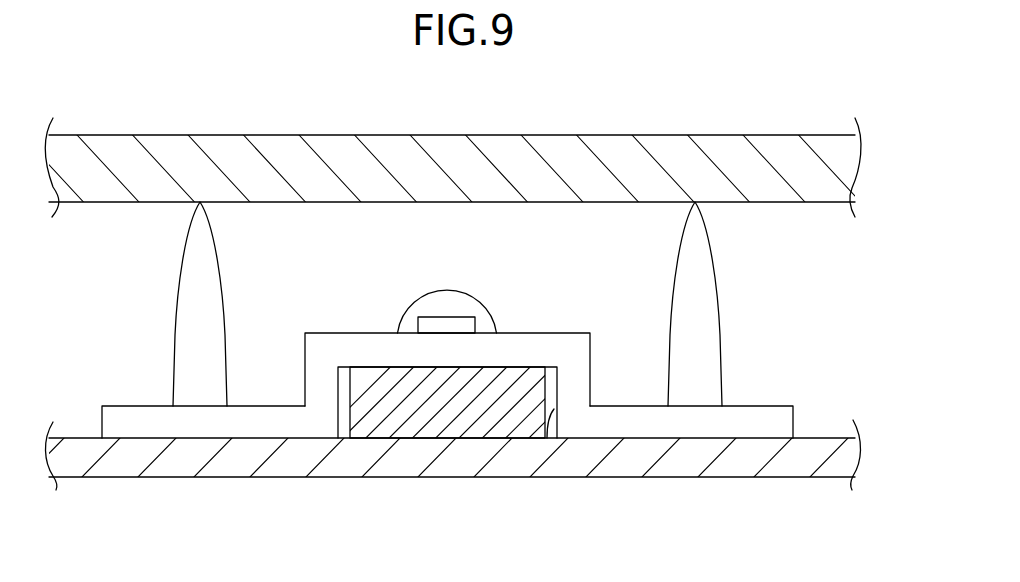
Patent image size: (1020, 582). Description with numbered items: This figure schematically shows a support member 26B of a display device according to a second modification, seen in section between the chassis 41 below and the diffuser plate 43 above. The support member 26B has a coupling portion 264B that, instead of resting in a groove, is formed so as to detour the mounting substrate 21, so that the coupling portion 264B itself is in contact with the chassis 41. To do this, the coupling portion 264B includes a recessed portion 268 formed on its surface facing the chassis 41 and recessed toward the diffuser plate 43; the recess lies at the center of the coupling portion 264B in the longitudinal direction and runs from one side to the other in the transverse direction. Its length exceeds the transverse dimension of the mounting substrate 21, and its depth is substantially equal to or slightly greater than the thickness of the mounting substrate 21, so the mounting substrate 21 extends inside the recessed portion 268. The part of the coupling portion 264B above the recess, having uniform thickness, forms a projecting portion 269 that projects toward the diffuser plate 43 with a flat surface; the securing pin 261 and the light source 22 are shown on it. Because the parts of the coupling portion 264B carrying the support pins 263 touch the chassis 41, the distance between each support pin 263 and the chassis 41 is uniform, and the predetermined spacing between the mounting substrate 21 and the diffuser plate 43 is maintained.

The diffuser plate 43 is at (785, 148).
The chassis 41 is at (787, 462).
The support pin 263 is at (183, 284).
The coupling portion 264B is at (258, 420).
The projecting portion 269 is at (328, 350).
The support member 26B is at (797, 405).
The mounting substrate 21 is at (448, 420).
The recessed portion 268 is at (554, 410).
The light source 22 is at (440, 300).
The securing pin 261 is at (455, 325).